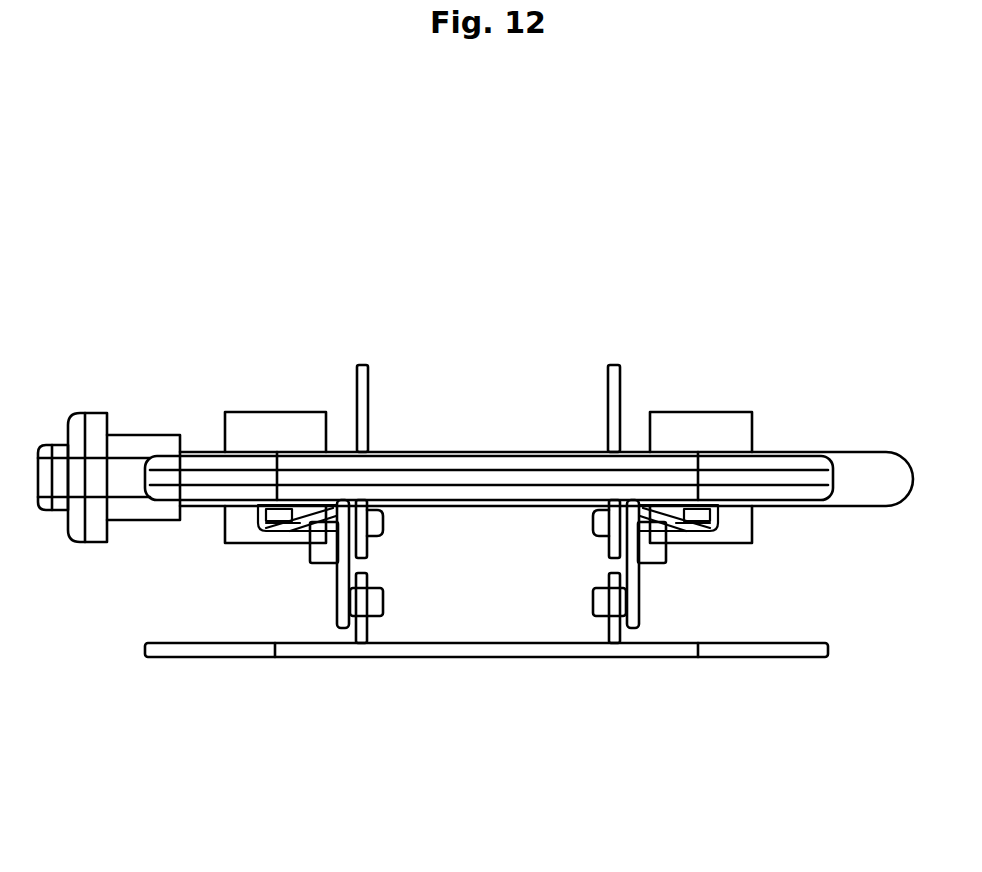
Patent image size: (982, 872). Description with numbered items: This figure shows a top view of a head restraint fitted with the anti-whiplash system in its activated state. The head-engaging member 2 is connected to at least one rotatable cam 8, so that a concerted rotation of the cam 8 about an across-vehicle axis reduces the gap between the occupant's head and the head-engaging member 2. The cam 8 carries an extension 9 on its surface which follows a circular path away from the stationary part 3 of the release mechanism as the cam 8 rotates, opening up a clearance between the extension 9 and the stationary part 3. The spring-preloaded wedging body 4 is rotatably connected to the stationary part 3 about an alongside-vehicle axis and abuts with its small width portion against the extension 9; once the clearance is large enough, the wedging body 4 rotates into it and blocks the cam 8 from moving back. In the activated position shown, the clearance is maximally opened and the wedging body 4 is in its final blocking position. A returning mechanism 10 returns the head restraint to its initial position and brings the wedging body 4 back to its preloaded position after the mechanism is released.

The head-engaging member 2 is at (417, 650).
The stationary part 3 is at (603, 473).
The wedging body 4 is at (272, 514).
The cam 8 is at (630, 568).
The extension 9 is at (650, 540).
The returning mechanism 10 is at (93, 440).